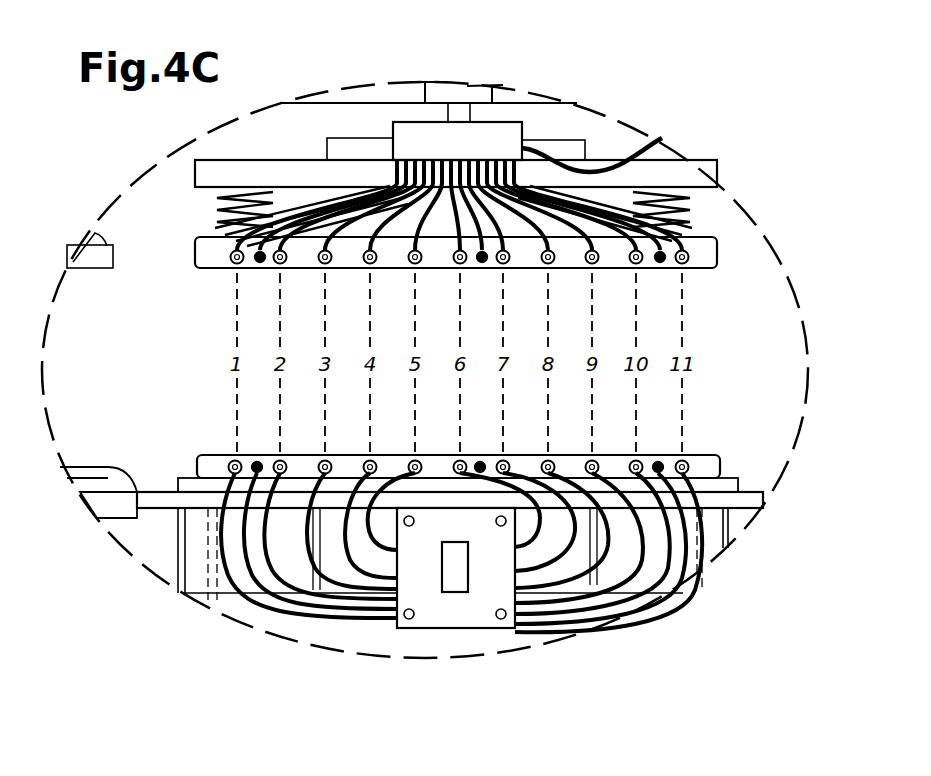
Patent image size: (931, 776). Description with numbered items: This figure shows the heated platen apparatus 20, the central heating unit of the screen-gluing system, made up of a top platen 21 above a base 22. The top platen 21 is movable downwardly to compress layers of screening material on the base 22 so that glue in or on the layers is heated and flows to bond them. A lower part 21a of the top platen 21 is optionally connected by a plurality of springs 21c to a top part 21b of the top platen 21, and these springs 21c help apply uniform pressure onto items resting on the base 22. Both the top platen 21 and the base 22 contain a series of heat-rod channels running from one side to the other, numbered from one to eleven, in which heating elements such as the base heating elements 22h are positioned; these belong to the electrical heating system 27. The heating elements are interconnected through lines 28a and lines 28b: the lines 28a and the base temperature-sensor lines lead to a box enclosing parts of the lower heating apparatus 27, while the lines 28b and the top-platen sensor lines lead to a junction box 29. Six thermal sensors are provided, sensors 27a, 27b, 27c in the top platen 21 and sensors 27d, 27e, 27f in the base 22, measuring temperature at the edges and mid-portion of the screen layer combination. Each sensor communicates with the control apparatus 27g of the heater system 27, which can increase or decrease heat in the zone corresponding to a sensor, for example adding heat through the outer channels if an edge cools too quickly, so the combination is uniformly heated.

The heated platen apparatus 20 is at (757, 284).
The top platen 21 is at (420, 204).
The lower part of the top platen 21a is at (197, 253).
The top part of the top platen 21b is at (208, 175).
The springs 21c is at (218, 218).
The base 22 is at (422, 431).
The heating elements 22h is at (228, 262).
The electrical heating system 27 is at (426, 599).
The thermal sensor 27a is at (260, 252).
The thermal sensor 27b is at (457, 141).
The thermal sensor 27c is at (660, 262).
The thermal sensor 27d is at (257, 462).
The thermal sensor 27e is at (478, 471).
The thermal sensor 27f is at (658, 462).
The control apparatus 27g is at (457, 583).
The lines 28a is at (592, 622).
The lines 28b is at (286, 220).
The junction box 29 is at (498, 133).